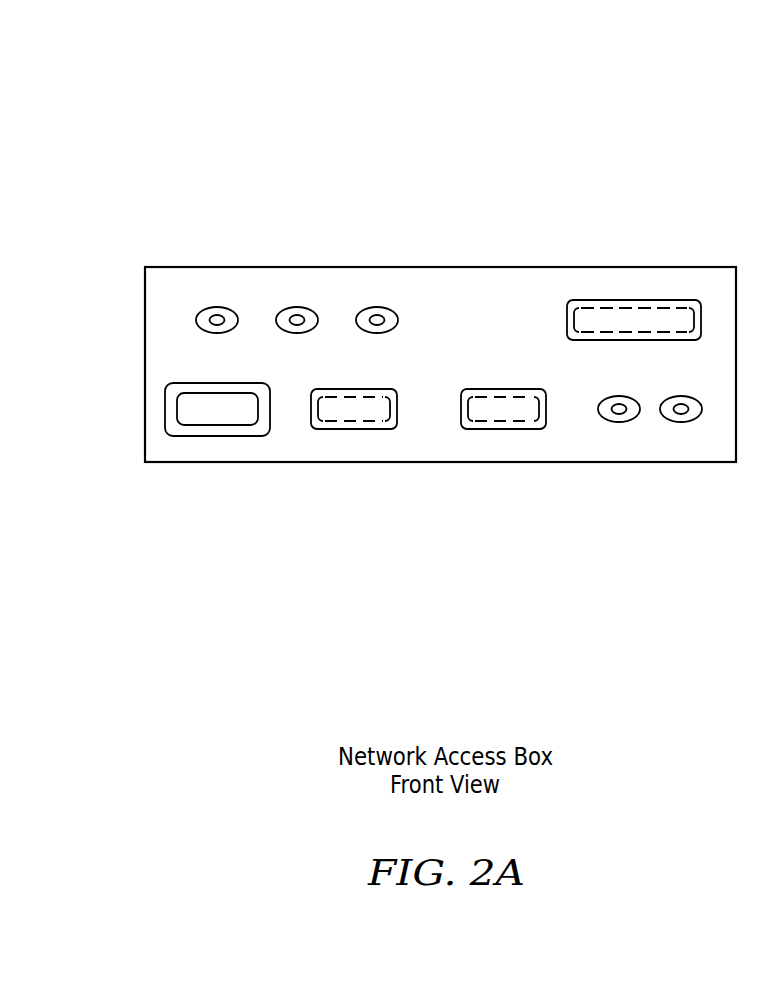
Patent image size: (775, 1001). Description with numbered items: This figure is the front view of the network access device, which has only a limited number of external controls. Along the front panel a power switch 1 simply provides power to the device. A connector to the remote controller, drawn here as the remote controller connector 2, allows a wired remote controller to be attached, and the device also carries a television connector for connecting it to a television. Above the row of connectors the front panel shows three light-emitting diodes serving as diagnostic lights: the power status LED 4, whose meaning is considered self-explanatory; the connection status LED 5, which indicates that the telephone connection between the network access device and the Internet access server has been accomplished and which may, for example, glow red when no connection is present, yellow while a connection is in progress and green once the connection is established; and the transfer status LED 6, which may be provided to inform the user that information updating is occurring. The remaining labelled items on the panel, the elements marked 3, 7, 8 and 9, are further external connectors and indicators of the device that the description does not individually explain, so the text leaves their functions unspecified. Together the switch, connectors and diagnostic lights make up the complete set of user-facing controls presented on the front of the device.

The power switch 1 is at (207, 452).
The Remote Controller Connector 2 is at (349, 445).
The Keyboard Connector 3 is at (490, 445).
The power status LED 4 is at (612, 436).
The connection status LED 5 is at (676, 437).
The transfer status LED 6 is at (215, 291).
The Connection Status LED 7 is at (296, 291).
The Transfer Status LED 8 is at (378, 291).
The Cartridge Connector 9 is at (629, 285).